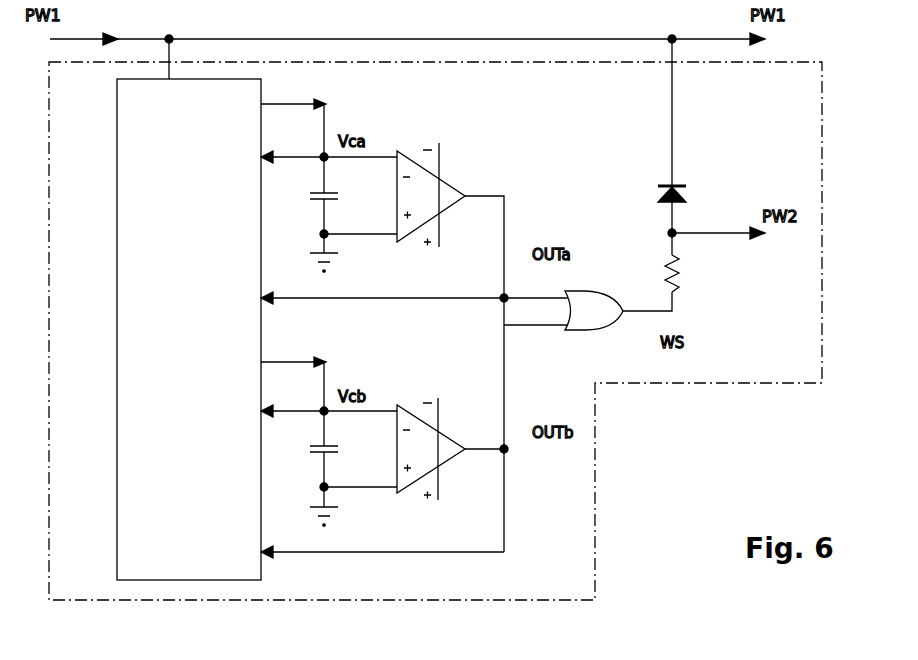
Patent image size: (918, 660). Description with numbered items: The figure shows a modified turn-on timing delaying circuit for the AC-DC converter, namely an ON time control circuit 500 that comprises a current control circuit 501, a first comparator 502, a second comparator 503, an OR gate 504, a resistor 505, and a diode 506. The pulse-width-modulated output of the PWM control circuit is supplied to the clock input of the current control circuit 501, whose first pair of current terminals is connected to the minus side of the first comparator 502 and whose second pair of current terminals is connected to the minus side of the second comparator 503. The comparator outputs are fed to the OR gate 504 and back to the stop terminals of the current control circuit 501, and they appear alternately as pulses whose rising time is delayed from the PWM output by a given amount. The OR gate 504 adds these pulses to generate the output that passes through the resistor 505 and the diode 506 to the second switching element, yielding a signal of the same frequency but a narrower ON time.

The ON time control circuit 500 is at (715, 381).
The current control circuit 501 is at (123, 300).
The first comparator 502 is at (431, 175).
The second comparator 503 is at (431, 433).
The OR gate 504 is at (594, 328).
The resistor 505 is at (692, 273).
The diode 506 is at (689, 188).